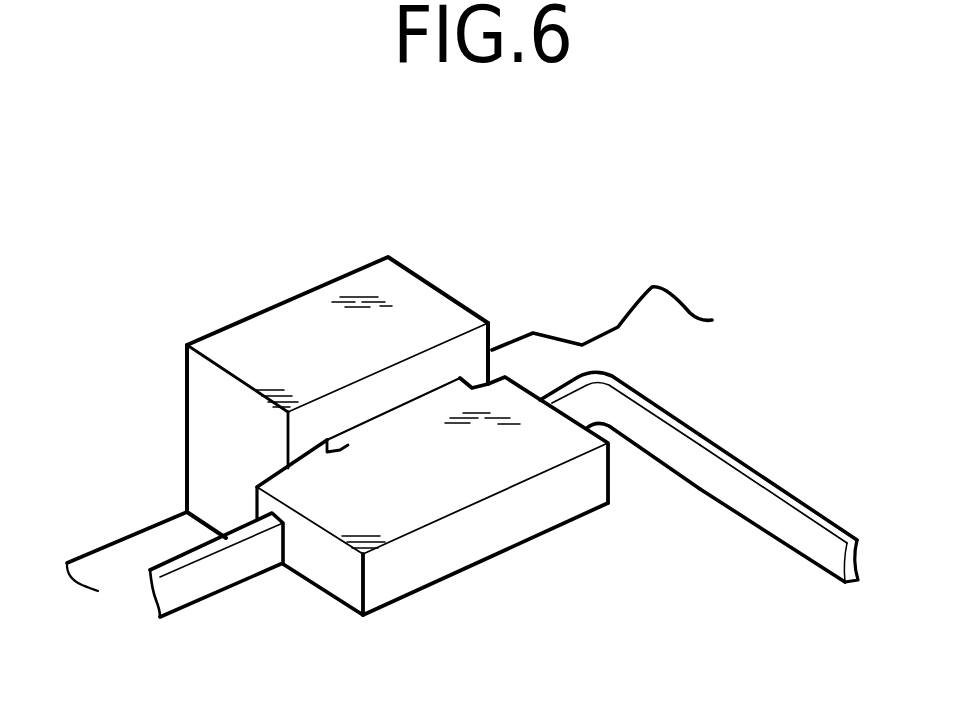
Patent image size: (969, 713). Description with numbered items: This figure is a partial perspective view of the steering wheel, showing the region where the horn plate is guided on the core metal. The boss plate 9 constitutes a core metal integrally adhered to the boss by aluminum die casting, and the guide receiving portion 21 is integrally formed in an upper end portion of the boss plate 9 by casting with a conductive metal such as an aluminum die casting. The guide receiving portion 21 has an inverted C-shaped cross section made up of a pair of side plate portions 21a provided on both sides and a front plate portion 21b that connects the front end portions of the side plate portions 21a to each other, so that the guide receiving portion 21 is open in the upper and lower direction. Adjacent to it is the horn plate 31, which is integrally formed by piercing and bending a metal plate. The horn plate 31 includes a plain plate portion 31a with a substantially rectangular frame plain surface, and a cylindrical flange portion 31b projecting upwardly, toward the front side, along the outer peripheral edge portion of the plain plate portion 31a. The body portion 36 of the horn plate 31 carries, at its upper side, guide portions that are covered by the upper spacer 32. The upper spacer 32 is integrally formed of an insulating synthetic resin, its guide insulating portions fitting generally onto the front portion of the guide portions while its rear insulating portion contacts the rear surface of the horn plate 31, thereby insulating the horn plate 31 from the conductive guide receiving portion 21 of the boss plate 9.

The boss plate 9 is at (105, 565).
The guide receiving portion 21 is at (396, 357).
The side plate portion 21a is at (222, 432).
The front plate portion 21b is at (280, 320).
The horn plate 31 is at (728, 518).
The plain plate portion 31a is at (777, 598).
The flange portion 31b is at (712, 452).
The upper spacer 32 is at (402, 577).
The body portion 36 is at (747, 578).